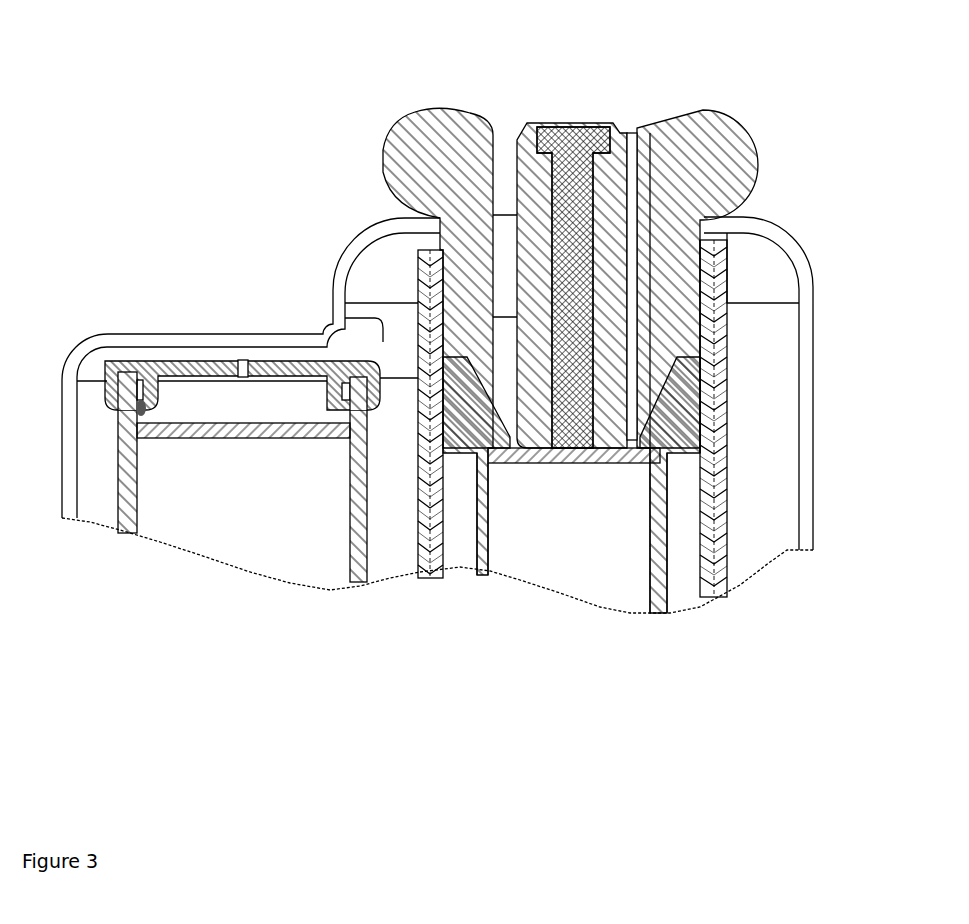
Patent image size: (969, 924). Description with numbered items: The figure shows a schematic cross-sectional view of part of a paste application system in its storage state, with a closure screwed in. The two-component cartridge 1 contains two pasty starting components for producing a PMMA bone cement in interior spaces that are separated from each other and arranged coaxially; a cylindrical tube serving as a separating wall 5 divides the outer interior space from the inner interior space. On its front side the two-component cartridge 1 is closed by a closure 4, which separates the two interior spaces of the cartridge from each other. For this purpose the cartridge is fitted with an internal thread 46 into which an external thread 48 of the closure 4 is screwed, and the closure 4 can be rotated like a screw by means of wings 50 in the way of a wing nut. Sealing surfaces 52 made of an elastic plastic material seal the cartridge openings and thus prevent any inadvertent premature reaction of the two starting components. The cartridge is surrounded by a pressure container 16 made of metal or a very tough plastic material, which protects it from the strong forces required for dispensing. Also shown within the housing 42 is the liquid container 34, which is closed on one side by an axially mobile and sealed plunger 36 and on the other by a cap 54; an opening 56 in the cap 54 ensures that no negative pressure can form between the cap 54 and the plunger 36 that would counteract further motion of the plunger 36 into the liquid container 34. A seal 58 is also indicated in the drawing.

The two-component cartridge 1 is at (433, 500).
The closure 4 is at (600, 217).
The separating wall 5 is at (480, 520).
The pressure container 16 is at (423, 528).
The liquid container 34 is at (293, 520).
The plunger 36 is at (227, 430).
The housing 42 is at (67, 400).
The internal thread 46 is at (690, 293).
The external thread 48 is at (447, 297).
The wing 50 is at (728, 155).
The seal 52 is at (660, 423).
The cap 54 is at (148, 372).
The opening 56 is at (242, 368).
The seal 58 is at (142, 417).